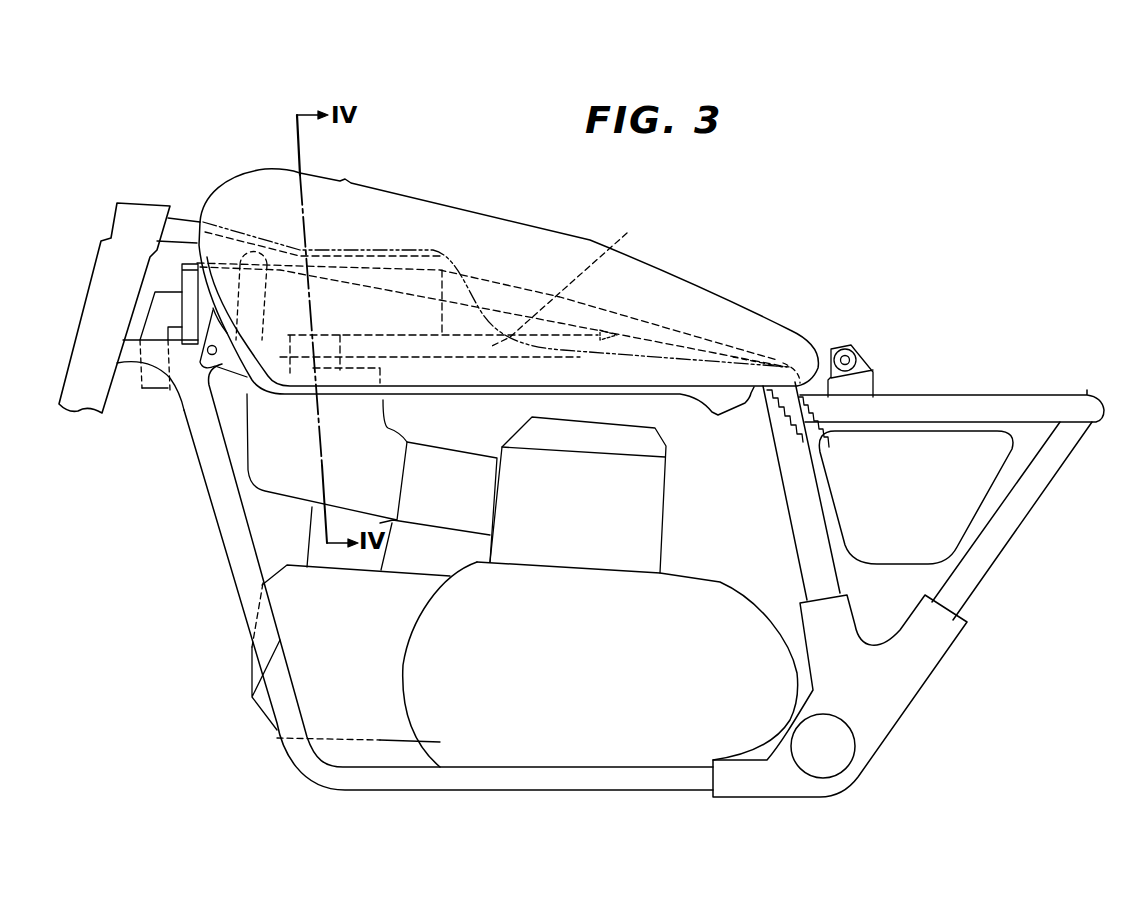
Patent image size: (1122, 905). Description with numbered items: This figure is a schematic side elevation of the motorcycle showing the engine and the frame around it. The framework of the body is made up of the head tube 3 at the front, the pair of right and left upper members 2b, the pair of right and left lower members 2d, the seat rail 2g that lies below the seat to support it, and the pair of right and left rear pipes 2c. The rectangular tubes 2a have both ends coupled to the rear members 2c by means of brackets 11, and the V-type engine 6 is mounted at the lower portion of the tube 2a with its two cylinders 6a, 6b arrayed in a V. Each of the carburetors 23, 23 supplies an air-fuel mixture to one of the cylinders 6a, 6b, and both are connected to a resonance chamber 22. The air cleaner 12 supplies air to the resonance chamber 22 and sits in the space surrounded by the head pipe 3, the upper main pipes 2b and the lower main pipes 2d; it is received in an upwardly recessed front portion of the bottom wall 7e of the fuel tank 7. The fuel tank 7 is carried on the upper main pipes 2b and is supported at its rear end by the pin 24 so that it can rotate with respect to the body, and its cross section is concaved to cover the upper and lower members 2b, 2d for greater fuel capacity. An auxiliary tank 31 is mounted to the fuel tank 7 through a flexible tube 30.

The head tube 3 is at (100, 308).
The upper members 2b is at (183, 224).
The tubes 2a is at (215, 485).
The rear pipes 2c is at (1020, 505).
The lower members 2d is at (572, 279).
The seat rail 2g is at (967, 395).
The fuel tank 7 is at (410, 197).
The bottom wall 7e is at (478, 245).
The air cleaner 12 is at (213, 312).
The resonance chamber 22 is at (377, 420).
The carburetors 23 is at (316, 535).
The pin 24 is at (852, 347).
The flexible tube 30 is at (787, 417).
The auxiliary tank 31 is at (945, 528).
The engine 6 is at (697, 592).
The cylinder 6a is at (248, 698).
The cylinder 6b is at (655, 497).
The brackets 11 is at (893, 720).